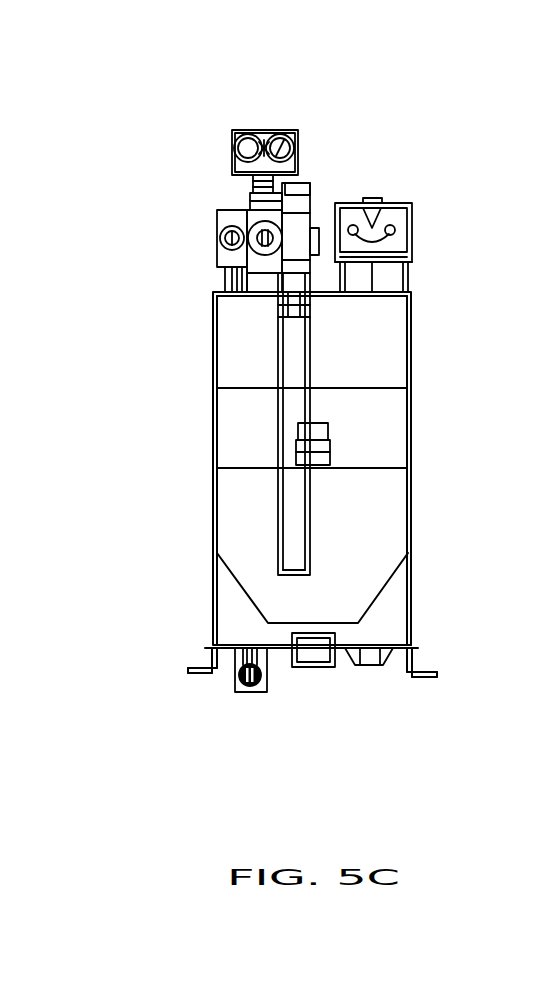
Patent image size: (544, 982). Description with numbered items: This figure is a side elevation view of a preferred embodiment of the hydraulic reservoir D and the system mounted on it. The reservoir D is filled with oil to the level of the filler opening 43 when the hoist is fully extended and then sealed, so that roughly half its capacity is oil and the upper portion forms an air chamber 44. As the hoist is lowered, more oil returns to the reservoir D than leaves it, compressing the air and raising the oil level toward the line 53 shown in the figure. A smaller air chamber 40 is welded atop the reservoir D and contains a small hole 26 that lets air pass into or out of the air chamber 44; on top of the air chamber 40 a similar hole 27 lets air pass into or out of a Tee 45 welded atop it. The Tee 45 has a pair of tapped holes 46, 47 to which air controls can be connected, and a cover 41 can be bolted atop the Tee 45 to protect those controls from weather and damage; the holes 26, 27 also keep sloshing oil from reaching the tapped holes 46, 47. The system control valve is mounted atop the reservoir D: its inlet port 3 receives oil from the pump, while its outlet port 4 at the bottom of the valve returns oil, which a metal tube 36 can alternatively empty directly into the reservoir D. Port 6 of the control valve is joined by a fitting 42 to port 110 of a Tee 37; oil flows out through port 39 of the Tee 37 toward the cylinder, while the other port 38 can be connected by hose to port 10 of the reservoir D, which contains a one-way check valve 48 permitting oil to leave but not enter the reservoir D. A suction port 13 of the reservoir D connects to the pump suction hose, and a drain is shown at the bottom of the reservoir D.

The inlet port 3 is at (320, 228).
The return port 4 is at (237, 278).
The port 6 is at (250, 199).
The port 10 is at (240, 690).
The suction port 13 is at (313, 658).
The hole 26 is at (367, 296).
The hole 27 is at (373, 280).
The metal tube 36 is at (290, 520).
The Tee 37 is at (263, 131).
The port 38 is at (232, 133).
The port 39 is at (294, 130).
The air chamber 40 is at (388, 277).
The cover 41 is at (413, 230).
The fitting 42 is at (252, 188).
The filler opening 43 is at (317, 470).
The air chamber 44 is at (240, 358).
The Tee 45 is at (387, 210).
The tapped hole 46 is at (363, 200).
The tapped hole 47 is at (392, 224).
The one-way check valve 48 is at (257, 693).
The line 53 is at (373, 388).
The port 110 is at (250, 178).
The reservoir D is at (413, 428).
The drain trough drain is at (370, 660).